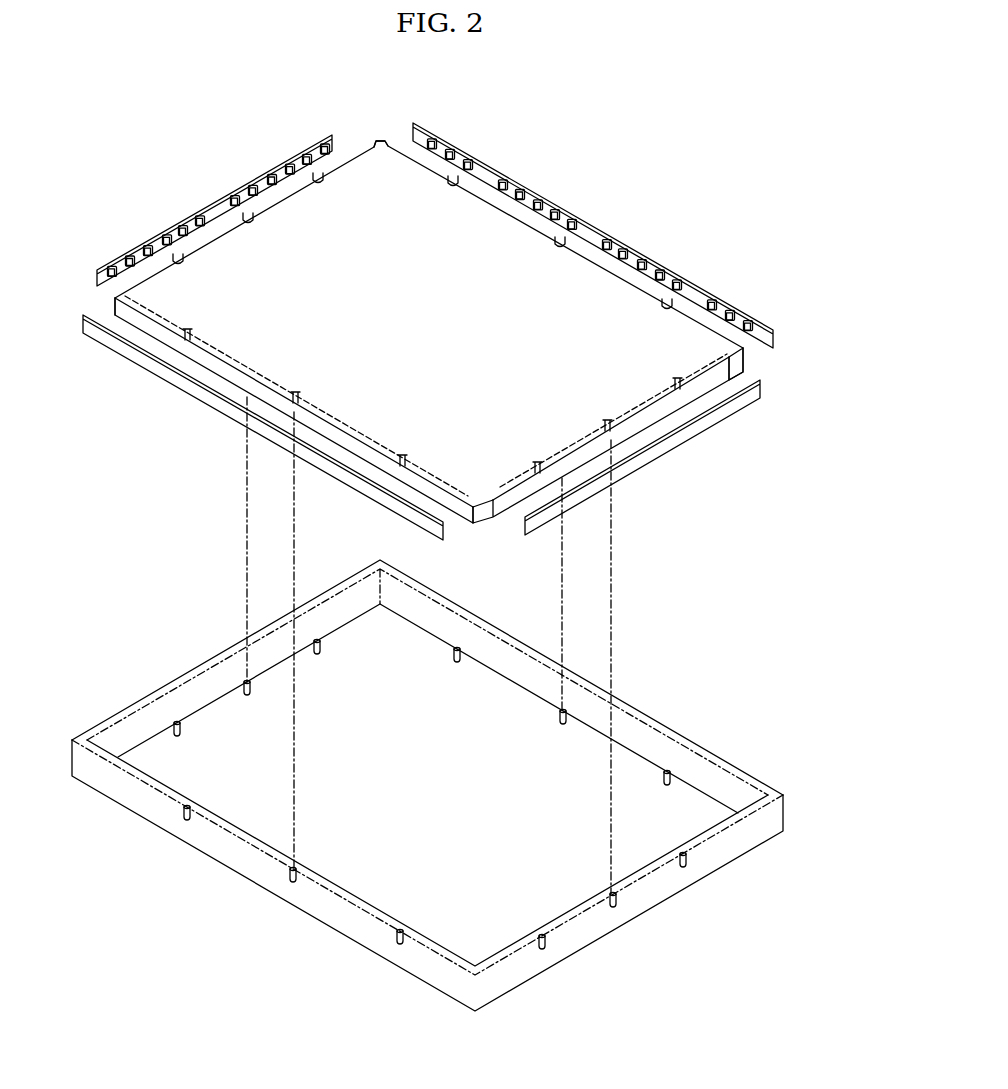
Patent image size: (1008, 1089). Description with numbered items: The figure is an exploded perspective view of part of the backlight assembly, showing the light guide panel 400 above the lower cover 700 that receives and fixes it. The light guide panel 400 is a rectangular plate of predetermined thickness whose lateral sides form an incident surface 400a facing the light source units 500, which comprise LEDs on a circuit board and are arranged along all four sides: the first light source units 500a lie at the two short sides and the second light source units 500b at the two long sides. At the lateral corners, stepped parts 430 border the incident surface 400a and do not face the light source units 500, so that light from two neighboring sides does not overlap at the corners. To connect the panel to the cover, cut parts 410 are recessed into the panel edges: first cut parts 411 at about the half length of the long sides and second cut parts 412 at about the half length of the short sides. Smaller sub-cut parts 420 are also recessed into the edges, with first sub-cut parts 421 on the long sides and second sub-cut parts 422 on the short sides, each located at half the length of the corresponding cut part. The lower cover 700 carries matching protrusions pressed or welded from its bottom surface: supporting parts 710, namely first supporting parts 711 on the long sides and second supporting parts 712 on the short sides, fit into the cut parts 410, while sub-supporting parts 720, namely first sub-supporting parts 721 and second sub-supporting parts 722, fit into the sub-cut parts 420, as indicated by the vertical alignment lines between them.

The light guide panel 400 is at (640, 277).
The incident surface 400a is at (508, 507).
The cut parts 410 is at (447, 320).
The first cut parts 411 is at (561, 244).
The second cut parts 412 is at (248, 219).
The sub-cut part 420 is at (442, 329).
The first sub-cut parts 421 is at (454, 183).
The second sub-cut parts 422 is at (319, 176).
The stepped parts 430 is at (376, 141).
The light source unit 500 is at (426, 308).
The first light source units 500a is at (318, 138).
The second light source units 500b is at (438, 132).
The lower cover 700 is at (745, 768).
The supporting parts 710 is at (431, 786).
The first supporting parts 711 is at (564, 710).
The second supporting parts 712 is at (245, 683).
The sub-supporting part 720 is at (431, 779).
The first sub-supporting parts 721 is at (459, 650).
The second sub-supporting parts 722 is at (315, 642).